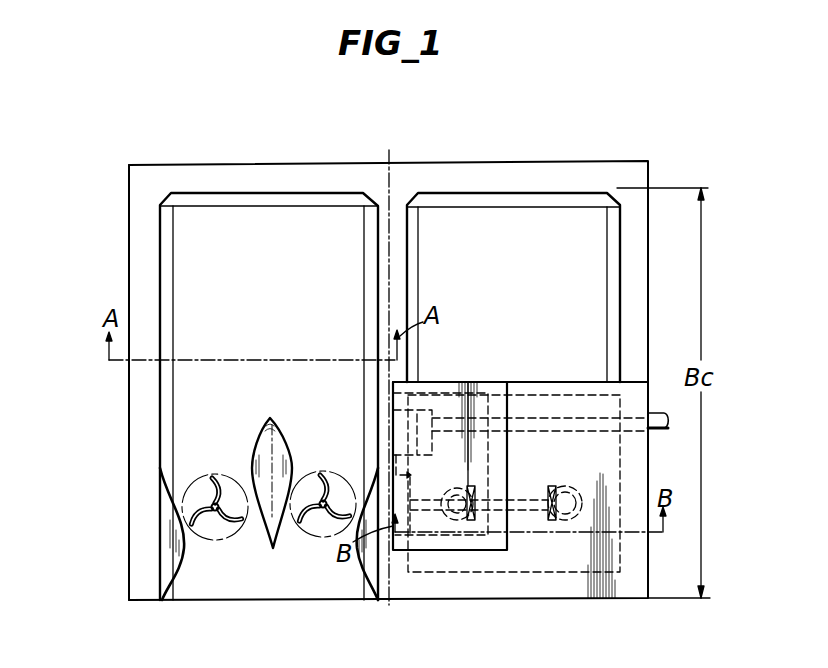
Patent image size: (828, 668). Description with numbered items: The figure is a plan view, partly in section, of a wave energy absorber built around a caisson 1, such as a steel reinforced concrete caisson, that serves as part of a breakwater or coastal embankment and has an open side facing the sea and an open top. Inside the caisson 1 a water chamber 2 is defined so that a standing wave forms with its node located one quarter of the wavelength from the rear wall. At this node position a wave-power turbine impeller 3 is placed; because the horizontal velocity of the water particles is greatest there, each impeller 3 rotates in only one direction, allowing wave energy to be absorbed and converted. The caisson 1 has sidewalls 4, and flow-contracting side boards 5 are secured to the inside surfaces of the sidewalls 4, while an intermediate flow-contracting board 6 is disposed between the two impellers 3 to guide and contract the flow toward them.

The caisson 1 is at (210, 177).
The water chamber 2 is at (273, 299).
The wave-power turbine impeller 3 is at (218, 524).
The sidewalls 4 is at (142, 418).
The flow-contracting side boards 5 is at (168, 543).
The intermediate flow-contracting board 6 is at (278, 452).